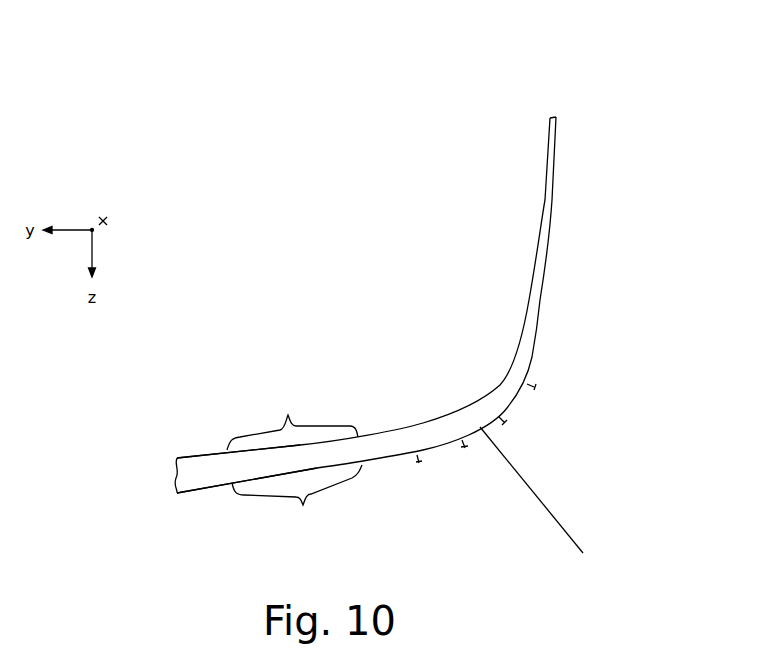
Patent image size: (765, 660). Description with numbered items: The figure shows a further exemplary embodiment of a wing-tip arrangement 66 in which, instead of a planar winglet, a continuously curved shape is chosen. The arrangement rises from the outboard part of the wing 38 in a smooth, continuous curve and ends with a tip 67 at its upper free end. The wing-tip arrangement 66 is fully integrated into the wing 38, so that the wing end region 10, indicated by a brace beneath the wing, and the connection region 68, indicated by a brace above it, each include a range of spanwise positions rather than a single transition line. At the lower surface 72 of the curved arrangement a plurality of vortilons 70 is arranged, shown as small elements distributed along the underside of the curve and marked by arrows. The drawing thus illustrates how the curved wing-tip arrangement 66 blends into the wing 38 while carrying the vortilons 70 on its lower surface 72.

The wing end region 10 is at (297, 502).
The wing 38 is at (208, 462).
The wing-tip arrangement 66 is at (265, 188).
The tip 67 is at (565, 104).
The connection region 68 is at (292, 415).
The vortilons 70 is at (429, 481).
The lower surface 72 is at (542, 510).